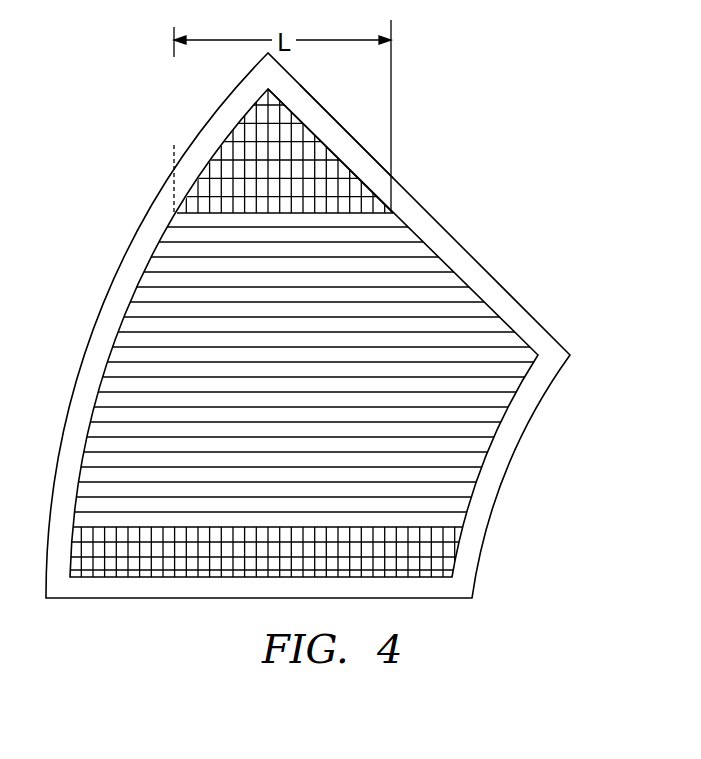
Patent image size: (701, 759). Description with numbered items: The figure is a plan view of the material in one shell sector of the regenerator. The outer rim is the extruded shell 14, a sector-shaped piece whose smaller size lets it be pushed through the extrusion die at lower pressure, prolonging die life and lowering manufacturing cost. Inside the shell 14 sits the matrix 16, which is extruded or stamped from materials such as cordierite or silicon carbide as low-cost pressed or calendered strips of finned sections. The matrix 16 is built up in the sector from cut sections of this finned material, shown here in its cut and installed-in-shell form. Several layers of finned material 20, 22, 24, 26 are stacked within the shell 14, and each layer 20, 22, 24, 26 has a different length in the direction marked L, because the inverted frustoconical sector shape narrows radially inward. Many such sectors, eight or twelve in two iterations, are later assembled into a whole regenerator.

The shell 14 is at (435, 233).
The matrix 16 is at (438, 315).
The layer of finned material 20 is at (347, 168).
The layer of finned material 22 is at (360, 180).
The layer of finned material 24 is at (374, 197).
The layer of finned material 26 is at (393, 210).